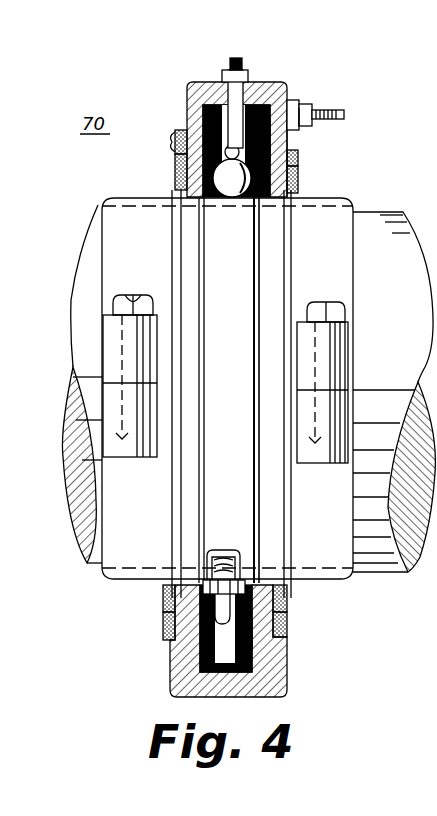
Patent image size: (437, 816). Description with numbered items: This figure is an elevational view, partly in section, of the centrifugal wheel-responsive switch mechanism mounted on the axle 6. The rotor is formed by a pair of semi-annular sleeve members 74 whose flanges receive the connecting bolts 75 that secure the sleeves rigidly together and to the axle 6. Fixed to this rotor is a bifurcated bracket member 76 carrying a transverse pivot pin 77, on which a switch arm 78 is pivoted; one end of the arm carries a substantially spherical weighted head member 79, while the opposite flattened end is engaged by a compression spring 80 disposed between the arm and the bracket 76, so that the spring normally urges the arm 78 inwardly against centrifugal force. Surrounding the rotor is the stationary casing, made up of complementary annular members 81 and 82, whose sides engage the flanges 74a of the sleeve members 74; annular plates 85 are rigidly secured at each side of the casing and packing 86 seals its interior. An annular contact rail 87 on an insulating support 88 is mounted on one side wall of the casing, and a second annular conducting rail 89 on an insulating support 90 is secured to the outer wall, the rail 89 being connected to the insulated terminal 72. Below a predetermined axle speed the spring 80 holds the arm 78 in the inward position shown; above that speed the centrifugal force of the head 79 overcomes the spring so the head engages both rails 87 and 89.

The axle 6 is at (74, 528).
The terminal 72 is at (244, 68).
The semi-annular sleeve members 74 is at (333, 208).
The flanges 74a is at (293, 270).
The connecting bolts 75 is at (124, 295).
The bifurcated bracket member 76 is at (222, 548).
The pivot pin 77 is at (210, 588).
The switch arm 78 is at (216, 648).
The weighted head member 79 is at (238, 198).
The compression spring 80 is at (258, 515).
The annular casing member 81 is at (186, 100).
The annular casing member 82 is at (276, 692).
The annular plates 85 is at (175, 173).
The packing 86 is at (172, 151).
The annular contact rail 87 is at (312, 104).
The insulating support 88 is at (302, 138).
The annular conducting rail 89 is at (278, 92).
The insulating support 90 is at (212, 105).